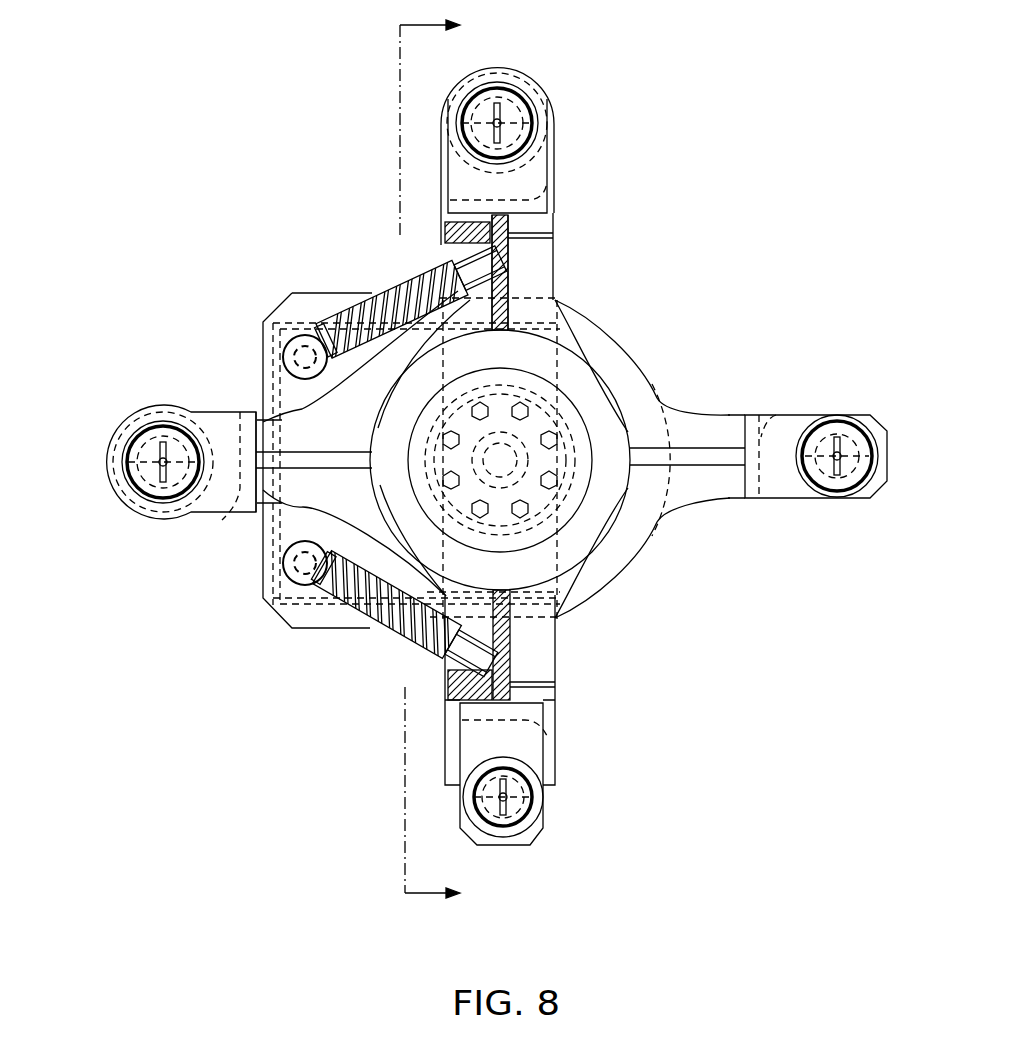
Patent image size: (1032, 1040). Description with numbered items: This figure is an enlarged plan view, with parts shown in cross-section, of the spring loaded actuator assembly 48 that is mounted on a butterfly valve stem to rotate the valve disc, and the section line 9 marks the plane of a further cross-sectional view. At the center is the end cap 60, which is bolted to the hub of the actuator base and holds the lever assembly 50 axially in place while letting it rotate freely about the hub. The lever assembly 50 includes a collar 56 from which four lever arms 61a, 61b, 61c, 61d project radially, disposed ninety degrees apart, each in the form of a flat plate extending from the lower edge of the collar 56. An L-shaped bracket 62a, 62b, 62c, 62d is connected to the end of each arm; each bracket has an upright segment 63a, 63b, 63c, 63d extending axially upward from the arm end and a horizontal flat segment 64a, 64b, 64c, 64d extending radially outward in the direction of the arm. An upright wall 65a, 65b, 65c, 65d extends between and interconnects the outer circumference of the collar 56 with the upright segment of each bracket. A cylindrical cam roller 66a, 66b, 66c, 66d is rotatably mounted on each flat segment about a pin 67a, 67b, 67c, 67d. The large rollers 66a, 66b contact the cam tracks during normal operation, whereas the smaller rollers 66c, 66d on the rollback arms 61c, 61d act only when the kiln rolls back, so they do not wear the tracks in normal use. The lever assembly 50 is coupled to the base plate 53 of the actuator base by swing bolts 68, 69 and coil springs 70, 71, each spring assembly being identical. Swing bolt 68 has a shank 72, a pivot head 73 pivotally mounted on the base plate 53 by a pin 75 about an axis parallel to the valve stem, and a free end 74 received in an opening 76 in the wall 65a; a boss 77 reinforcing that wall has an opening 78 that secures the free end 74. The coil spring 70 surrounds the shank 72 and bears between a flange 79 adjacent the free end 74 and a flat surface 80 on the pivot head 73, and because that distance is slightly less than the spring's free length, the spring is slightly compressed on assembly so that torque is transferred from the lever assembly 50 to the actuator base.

The section line 9- 9 is at (444, 459).
The spring loaded actuator assembly 48 is at (342, 681).
The lever assembly 50 is at (700, 488).
The base plate 53 is at (308, 622).
The collar 56 is at (600, 385).
The end cap 60 is at (565, 512).
The lever arm 61a is at (540, 282).
The lever arm 61b is at (300, 538).
The lever arm 61c is at (540, 645).
The lever arm 61d is at (720, 412).
The L-shaped bracket 62a is at (556, 168).
The L-shaped bracket 62b is at (226, 412).
The L-shaped bracket 62c is at (560, 770).
The L-shaped bracket 62d is at (790, 499).
The upright segment 63a is at (560, 188).
The upright segment 63b is at (236, 505).
The upright segment 63c is at (560, 747).
The upright segment 63d is at (772, 420).
The horizontal flat segment 64a is at (455, 170).
The horizontal flat segment 64b is at (230, 425).
The horizontal flat segment 64c is at (468, 757).
The horizontal flat segment 64d is at (880, 485).
The upright wall 65a is at (510, 322).
The upright wall 65b is at (300, 470).
The upright wall 65c is at (525, 612).
The upright wall 65d is at (692, 470).
The cam roller 66a is at (528, 88).
The cam roller 66b is at (126, 505).
The cam roller 66c is at (463, 805).
The cam roller 66d is at (845, 416).
The pin 67a is at (498, 82).
The pin 67b is at (142, 432).
The pin 67c is at (527, 810).
The pin 67d is at (850, 440).
The swing bolt 68 is at (512, 248).
The swing bolt 69 is at (520, 680).
The coil spring 70 is at (415, 282).
The coil spring 71 is at (392, 637).
The shank 72 is at (392, 295).
The pivot head 73 is at (296, 346).
The free end 74 is at (445, 240).
The pin 75 is at (303, 318).
The opening 76 is at (510, 236).
The boss 77 is at (455, 252).
The opening 78 is at (487, 700).
The flange 79 is at (468, 322).
The flat surface 80 is at (356, 362).